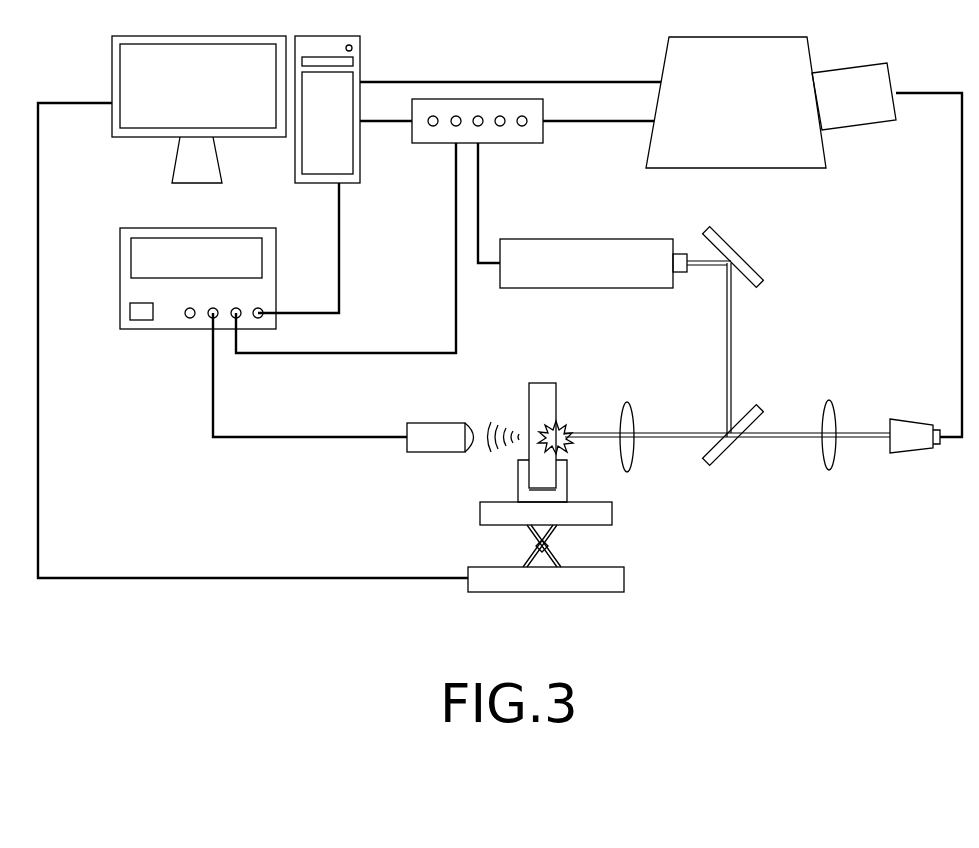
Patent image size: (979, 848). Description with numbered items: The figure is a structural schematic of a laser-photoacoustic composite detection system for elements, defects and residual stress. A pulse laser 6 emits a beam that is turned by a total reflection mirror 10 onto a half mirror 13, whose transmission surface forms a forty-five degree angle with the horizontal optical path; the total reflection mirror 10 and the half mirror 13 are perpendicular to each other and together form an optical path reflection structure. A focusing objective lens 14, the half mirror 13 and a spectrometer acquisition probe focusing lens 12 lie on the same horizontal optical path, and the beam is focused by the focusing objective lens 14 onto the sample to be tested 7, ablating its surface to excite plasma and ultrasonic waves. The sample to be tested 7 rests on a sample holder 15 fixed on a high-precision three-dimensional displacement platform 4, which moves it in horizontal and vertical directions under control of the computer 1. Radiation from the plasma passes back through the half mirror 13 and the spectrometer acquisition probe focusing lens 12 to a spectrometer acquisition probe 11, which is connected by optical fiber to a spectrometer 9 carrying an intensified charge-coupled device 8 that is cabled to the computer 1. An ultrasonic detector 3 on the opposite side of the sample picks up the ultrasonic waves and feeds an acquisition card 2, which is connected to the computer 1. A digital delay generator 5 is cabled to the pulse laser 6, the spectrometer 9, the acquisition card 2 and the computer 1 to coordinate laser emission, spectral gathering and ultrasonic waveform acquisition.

The computer 1 is at (150, 137).
The acquisition card 2 is at (168, 329).
The ultrasonic detector 3 is at (438, 452).
The 3D displacement platform 4 is at (478, 512).
The digital delay generator 5 is at (515, 143).
The pulse laser 6 is at (547, 288).
The sample to be tested 7 is at (557, 410).
The intensified charge-coupled device (ICCD) 8 is at (840, 128).
The spectrometer 9 is at (758, 168).
The total reflection mirror 10 is at (760, 278).
The spectrometer acquisition probe 11 is at (918, 423).
The spectrometer acquisition probe focusing lens 12 is at (837, 412).
The half mirror 13 is at (735, 447).
The focusing objective lens 14 is at (633, 450).
The sample holder 15 is at (567, 478).